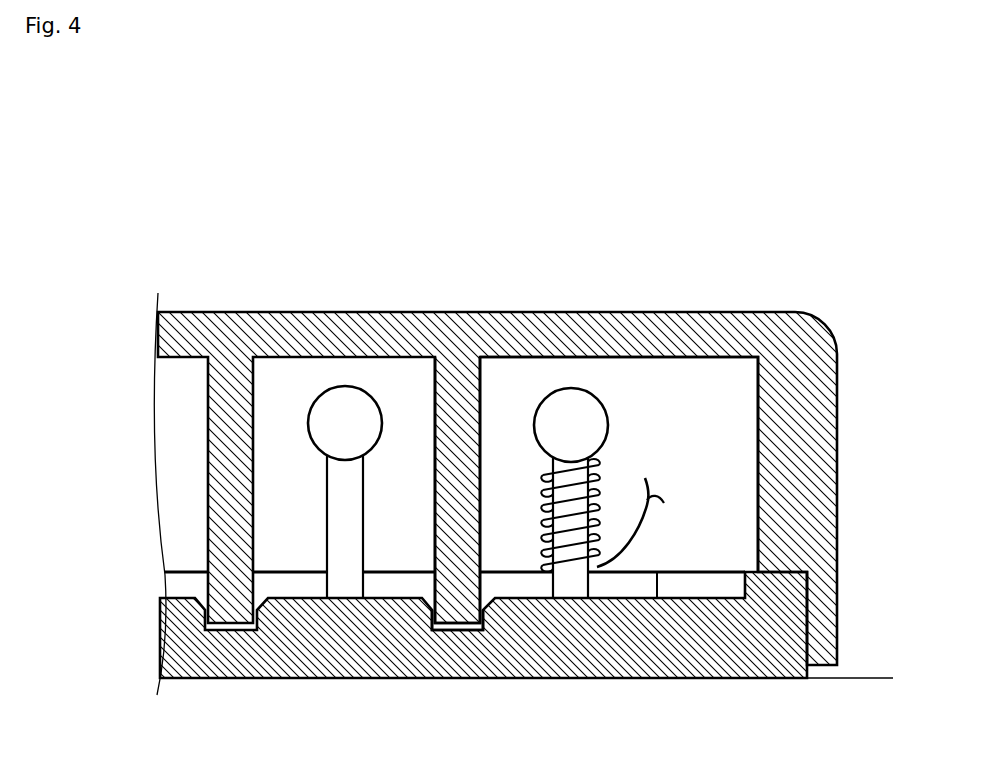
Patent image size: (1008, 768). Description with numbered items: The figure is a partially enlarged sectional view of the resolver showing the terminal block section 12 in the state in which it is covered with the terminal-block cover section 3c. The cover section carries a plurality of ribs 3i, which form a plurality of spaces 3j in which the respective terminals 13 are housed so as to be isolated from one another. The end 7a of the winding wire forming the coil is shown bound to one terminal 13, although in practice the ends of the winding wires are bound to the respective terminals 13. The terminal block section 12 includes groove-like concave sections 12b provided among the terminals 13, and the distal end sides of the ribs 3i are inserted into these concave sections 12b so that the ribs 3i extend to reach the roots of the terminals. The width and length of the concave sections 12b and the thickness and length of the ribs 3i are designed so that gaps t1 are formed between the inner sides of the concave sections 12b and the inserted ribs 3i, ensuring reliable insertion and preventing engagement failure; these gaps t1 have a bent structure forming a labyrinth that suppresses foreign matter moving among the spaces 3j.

The terminal-block cover section 3c is at (659, 312).
The rib 3i is at (452, 428).
The space 3j is at (716, 452).
The terminal 13 is at (571, 388).
The end of the winding wire 7a is at (631, 545).
The terminal block section 12 is at (390, 679).
The concave section 12b is at (486, 628).
The gap t1 is at (456, 627).